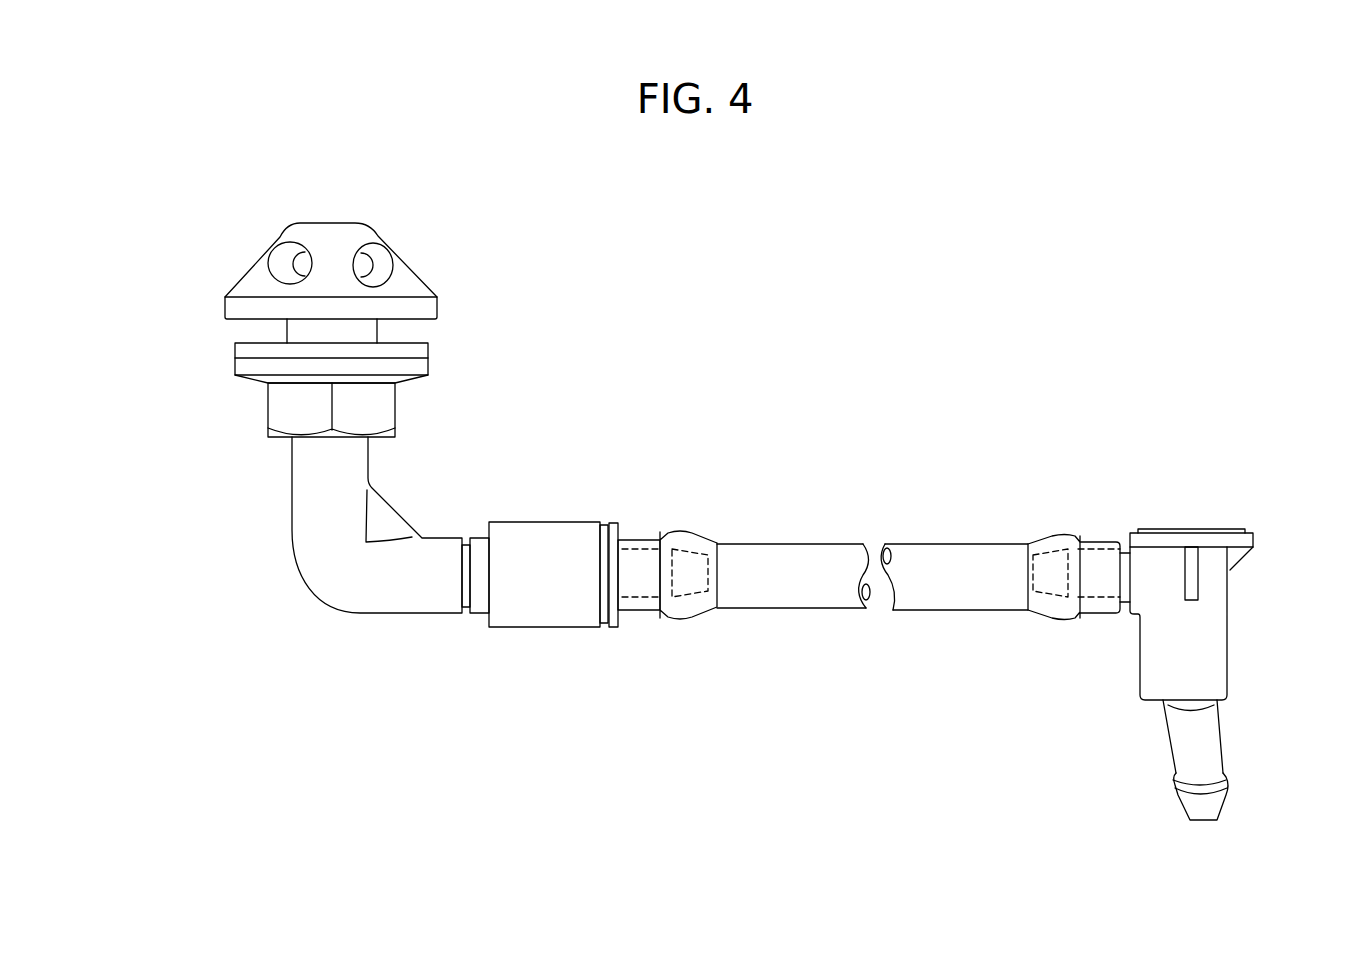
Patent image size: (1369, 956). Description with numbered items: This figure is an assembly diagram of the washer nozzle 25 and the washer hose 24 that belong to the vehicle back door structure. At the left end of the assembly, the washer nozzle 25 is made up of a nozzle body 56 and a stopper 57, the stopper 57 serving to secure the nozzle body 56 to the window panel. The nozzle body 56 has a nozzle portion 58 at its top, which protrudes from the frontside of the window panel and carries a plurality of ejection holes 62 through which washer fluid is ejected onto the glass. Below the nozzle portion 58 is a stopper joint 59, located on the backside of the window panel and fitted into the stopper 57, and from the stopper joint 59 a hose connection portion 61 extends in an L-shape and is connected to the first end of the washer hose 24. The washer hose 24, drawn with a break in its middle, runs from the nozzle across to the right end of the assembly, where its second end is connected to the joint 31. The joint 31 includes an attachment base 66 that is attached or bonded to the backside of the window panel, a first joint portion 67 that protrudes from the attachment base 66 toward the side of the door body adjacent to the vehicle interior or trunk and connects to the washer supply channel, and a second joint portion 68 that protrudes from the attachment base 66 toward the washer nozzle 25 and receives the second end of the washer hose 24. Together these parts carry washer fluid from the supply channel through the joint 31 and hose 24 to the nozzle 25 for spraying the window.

The washer hose 24 is at (798, 560).
The washer nozzle 25 is at (122, 302).
The joint 31 is at (1210, 627).
The nozzle body 56 is at (313, 491).
The stopper 57 is at (242, 367).
The nozzle portion 58 is at (335, 237).
The stopper joint 59 is at (352, 449).
The hose connection portion 61 is at (642, 553).
The ejection holes 62 is at (288, 253).
The attachment base 66 is at (1215, 538).
The first joint portion 67 is at (1212, 747).
The second joint portion 68 is at (1097, 555).